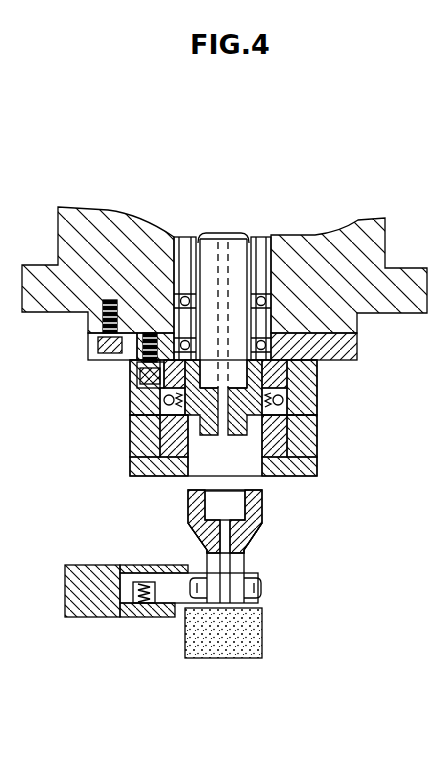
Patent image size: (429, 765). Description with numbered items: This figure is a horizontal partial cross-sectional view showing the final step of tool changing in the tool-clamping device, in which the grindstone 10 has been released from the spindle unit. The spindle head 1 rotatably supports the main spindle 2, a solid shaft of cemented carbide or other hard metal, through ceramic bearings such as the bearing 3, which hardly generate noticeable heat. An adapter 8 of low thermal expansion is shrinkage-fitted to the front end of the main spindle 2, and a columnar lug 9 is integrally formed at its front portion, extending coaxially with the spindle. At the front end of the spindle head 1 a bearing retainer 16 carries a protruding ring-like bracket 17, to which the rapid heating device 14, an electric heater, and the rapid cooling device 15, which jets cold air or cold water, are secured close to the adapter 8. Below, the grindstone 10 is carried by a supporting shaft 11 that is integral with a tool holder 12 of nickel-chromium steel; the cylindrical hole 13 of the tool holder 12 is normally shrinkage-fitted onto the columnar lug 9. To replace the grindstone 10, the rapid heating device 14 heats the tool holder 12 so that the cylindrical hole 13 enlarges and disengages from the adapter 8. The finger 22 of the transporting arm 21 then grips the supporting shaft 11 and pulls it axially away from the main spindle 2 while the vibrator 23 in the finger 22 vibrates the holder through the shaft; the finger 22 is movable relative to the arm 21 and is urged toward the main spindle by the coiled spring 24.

The spindle head 1 is at (377, 240).
The main spindle 2 is at (246, 236).
The bearing 3 is at (268, 304).
The adapter 8 is at (130, 380).
The columnar lug 9 is at (205, 428).
The rotary tool 10 is at (264, 637).
The supporting shaft 11 is at (238, 566).
The tool holder 12 is at (258, 535).
The cylindrical hole 13 is at (240, 507).
The rapid heating device 14 is at (137, 433).
The rapid cooling device 15 is at (130, 402).
The bearing retainer 16 is at (322, 372).
The ring-like bracket 17 is at (316, 463).
The transporting arm 21 is at (79, 618).
The finger 22 is at (185, 572).
The vibrator 23 is at (262, 598).
The coiled spring 24 is at (148, 615).